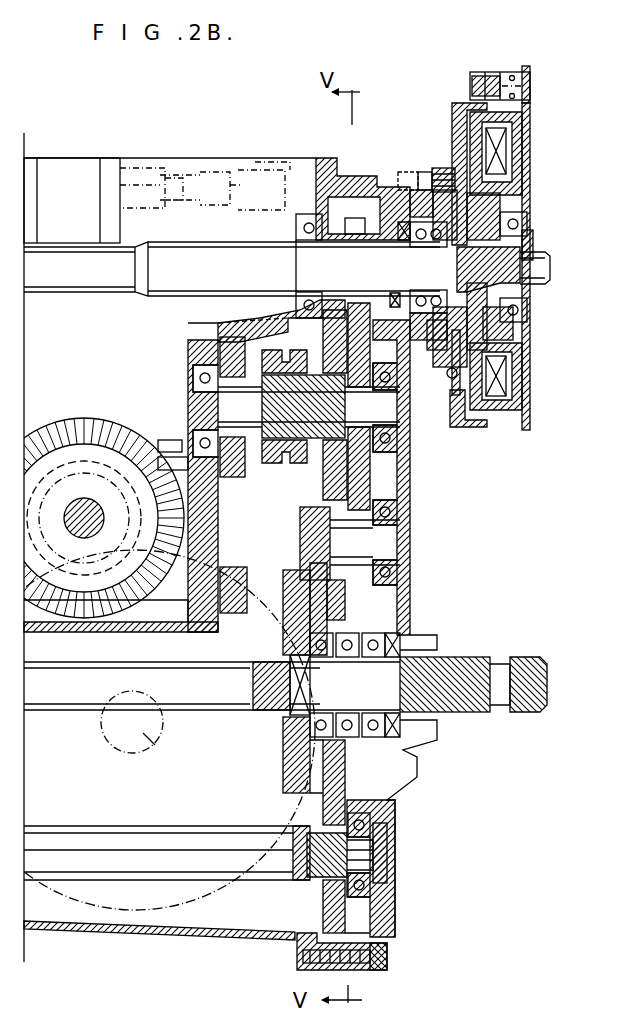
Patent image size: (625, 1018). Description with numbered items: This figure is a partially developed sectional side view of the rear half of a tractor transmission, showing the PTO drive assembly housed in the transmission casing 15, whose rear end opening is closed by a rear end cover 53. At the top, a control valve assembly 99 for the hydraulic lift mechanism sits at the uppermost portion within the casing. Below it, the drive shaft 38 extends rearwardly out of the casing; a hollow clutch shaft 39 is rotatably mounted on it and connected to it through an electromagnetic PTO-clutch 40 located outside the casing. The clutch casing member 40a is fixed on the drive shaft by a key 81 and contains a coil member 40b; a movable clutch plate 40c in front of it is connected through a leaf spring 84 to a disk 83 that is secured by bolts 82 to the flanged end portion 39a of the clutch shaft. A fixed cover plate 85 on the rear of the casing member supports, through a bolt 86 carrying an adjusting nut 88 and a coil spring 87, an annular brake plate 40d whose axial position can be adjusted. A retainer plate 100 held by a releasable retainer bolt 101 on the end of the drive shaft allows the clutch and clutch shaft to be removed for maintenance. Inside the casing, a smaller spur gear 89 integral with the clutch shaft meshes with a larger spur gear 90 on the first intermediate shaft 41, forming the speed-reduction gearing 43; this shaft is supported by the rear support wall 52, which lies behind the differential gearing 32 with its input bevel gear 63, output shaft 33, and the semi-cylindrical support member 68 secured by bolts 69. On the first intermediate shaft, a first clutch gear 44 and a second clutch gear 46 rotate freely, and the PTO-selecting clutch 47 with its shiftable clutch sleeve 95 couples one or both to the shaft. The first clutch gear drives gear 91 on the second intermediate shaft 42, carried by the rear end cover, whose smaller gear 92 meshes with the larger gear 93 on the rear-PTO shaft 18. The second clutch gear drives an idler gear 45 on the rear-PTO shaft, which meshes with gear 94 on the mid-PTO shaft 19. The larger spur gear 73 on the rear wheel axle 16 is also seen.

The transmission casing 15 is at (185, 937).
The rear wheel axle 16 is at (145, 735).
The rear-PTO shaft 18 is at (228, 698).
The mid-PTO shaft 19 is at (80, 838).
The differential gearing 32 is at (137, 590).
The output shaft 33 is at (78, 507).
The drive shaft 38 is at (97, 273).
The hollow clutch shaft 39 is at (381, 212).
The flanged end portion 39a is at (438, 357).
The PTO-clutch 40 is at (497, 430).
The casing member 40a is at (512, 420).
The coil member 40b is at (505, 152).
The movable clutch plate 40c is at (444, 170).
The annular brake plate 40d is at (449, 147).
The first intermediate shaft 41 is at (360, 408).
The second intermediate shaft 42 is at (375, 540).
The speed-reduction gearing 43 is at (377, 328).
The first clutch gear 44 is at (225, 343).
The idler gear 45 is at (340, 592).
The second clutch gear 46 is at (314, 300).
The PTO-selecting clutch 47 is at (254, 340).
The support wall 52 is at (192, 350).
The rear end cover 53 is at (408, 780).
The input bevel gear 63 is at (84, 428).
The semi-cylindrical support member 68 is at (172, 462).
The bolt 69 is at (158, 445).
The larger spur gear 73 is at (80, 922).
The key 81 is at (528, 245).
The bolt 82 is at (418, 180).
The disk 83 is at (446, 168).
The leaf spring 84 is at (455, 270).
The cover plate 85 is at (524, 408).
The bolt 86 is at (524, 70).
The coil spring 87 is at (508, 72).
The adjusting nut 88 is at (482, 72).
The smaller spur gear 89 is at (350, 216).
The larger spur gear 90 is at (390, 500).
The gear 91 is at (232, 613).
The smaller gear 92 is at (283, 448).
The larger gear 93 is at (282, 787).
The gear 94 is at (302, 945).
The clutch sleeve 95 is at (295, 448).
The control valve assembly 99 is at (86, 165).
The retainer plate 100 is at (530, 296).
The retainer bolt 101 is at (542, 268).